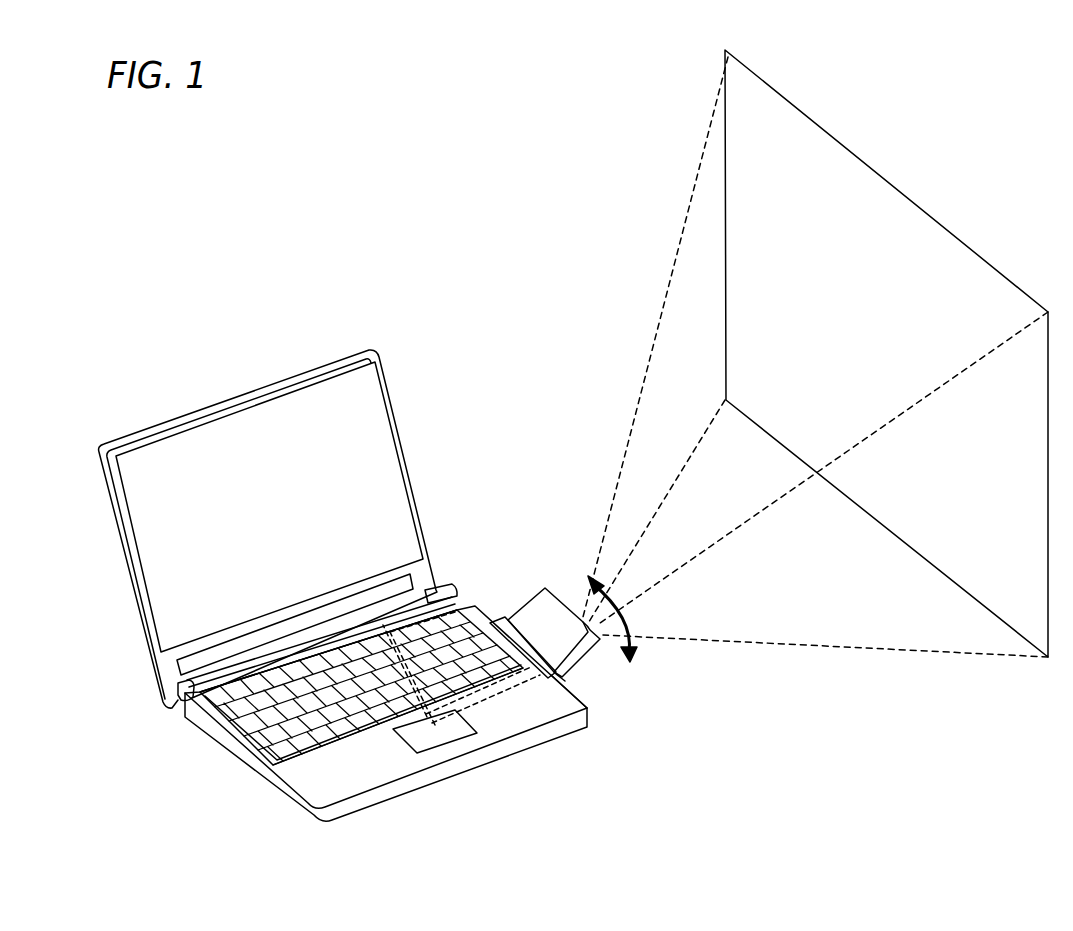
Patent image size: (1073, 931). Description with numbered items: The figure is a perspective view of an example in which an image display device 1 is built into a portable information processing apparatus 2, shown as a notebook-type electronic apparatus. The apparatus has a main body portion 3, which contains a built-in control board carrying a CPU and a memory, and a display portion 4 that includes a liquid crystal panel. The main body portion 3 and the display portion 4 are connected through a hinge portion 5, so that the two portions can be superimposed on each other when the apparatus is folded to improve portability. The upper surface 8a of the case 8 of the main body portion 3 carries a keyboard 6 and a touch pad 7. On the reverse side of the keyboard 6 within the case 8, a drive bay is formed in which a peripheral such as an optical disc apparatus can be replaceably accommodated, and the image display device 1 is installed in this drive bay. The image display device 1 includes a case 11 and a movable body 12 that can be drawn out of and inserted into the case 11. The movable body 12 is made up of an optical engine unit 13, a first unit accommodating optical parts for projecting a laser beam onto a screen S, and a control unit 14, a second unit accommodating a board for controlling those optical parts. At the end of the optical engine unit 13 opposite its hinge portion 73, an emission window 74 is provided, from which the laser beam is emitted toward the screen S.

The image display device 1 is at (597, 663).
The portable information processing apparatus 2 is at (150, 424).
The main body portion 3 is at (466, 778).
The display portion 4 is at (120, 543).
The hinge portion 5 is at (158, 698).
The keyboard 6 is at (240, 722).
The touch pad 7 is at (407, 750).
The case 8 is at (247, 773).
The upper surface 8a is at (317, 781).
The case 11 is at (500, 700).
The movable body 12 is at (540, 541).
The optical engine unit 13 is at (521, 603).
The control unit 14 is at (498, 622).
The hinge portion 73 is at (562, 677).
The emission window 74 is at (587, 624).
The screen S is at (737, 181).